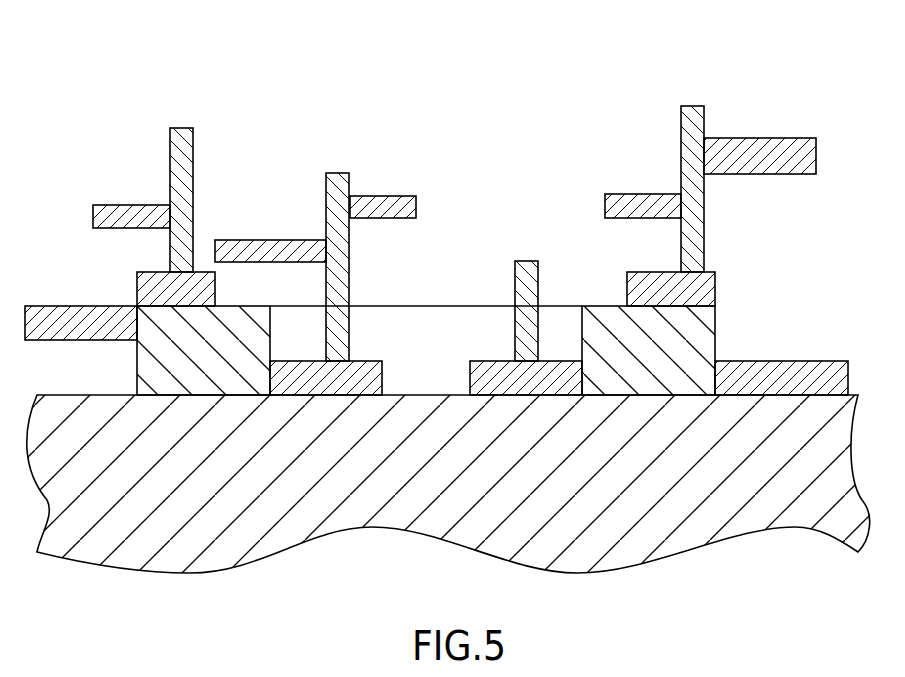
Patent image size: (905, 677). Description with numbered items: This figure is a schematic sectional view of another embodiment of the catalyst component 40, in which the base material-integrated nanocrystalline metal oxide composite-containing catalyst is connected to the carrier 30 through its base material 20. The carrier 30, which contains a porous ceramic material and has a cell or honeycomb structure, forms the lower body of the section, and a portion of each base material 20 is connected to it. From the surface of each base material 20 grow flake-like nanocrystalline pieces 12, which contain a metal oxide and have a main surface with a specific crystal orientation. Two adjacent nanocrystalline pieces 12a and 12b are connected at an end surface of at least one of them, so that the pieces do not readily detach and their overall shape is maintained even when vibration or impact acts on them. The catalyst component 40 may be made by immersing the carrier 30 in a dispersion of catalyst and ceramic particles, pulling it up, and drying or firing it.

The nanocrystalline piece 12 is at (183, 132).
The nanocrystalline piece 12a is at (737, 147).
The nanocrystalline piece 12b is at (702, 110).
The base material 20 is at (170, 357).
The carrier 30 is at (747, 512).
The catalyst component 40 is at (716, 151).